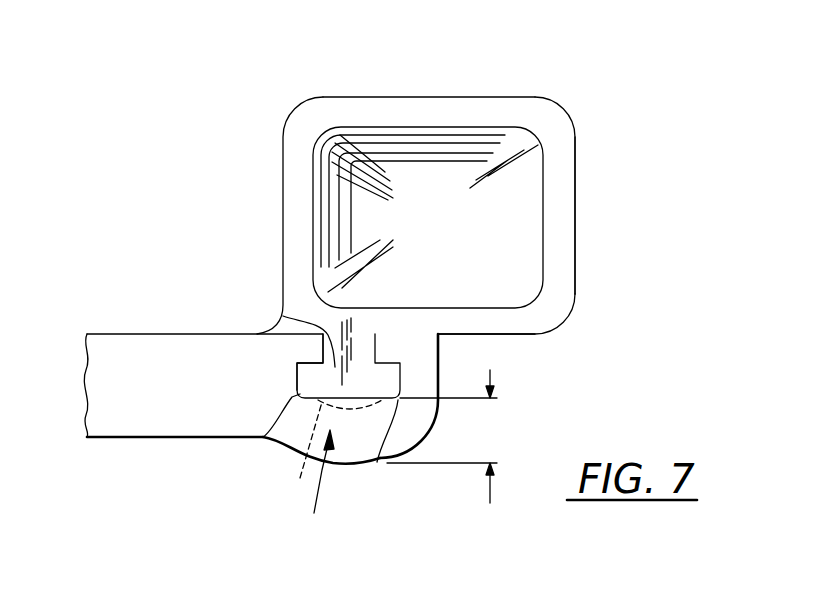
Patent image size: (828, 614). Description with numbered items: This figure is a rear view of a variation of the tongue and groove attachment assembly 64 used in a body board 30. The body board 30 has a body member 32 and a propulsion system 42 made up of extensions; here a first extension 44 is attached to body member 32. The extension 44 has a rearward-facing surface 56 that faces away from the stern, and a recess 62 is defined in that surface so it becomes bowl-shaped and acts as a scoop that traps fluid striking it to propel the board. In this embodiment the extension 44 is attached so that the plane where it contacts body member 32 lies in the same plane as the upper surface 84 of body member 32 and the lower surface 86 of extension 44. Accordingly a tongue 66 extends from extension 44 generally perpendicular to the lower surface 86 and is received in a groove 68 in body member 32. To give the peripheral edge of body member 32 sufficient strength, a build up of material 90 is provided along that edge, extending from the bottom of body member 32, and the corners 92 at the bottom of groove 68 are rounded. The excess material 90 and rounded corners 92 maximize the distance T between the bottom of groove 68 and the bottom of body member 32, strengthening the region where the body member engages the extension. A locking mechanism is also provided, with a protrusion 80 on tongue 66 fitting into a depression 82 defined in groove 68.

The body board 30 is at (198, 187).
The propulsion system 42 is at (286, 83).
The first extension 44 is at (430, 103).
The rearward-facing surface 56 is at (528, 97).
The recess 62 is at (513, 200).
The lower surface 86 is at (532, 337).
The groove 68 is at (283, 320).
The upper surface 84 is at (148, 334).
The body member 32 is at (130, 423).
The tongue 66 is at (365, 345).
The build up of material 90 is at (350, 464).
The corners 92 is at (263, 437).
The protrusion 80 is at (258, 451).
The depression 82 is at (301, 476).
The tongue and groove attachment assembly 64 is at (309, 478).
The distance T is at (444, 436).